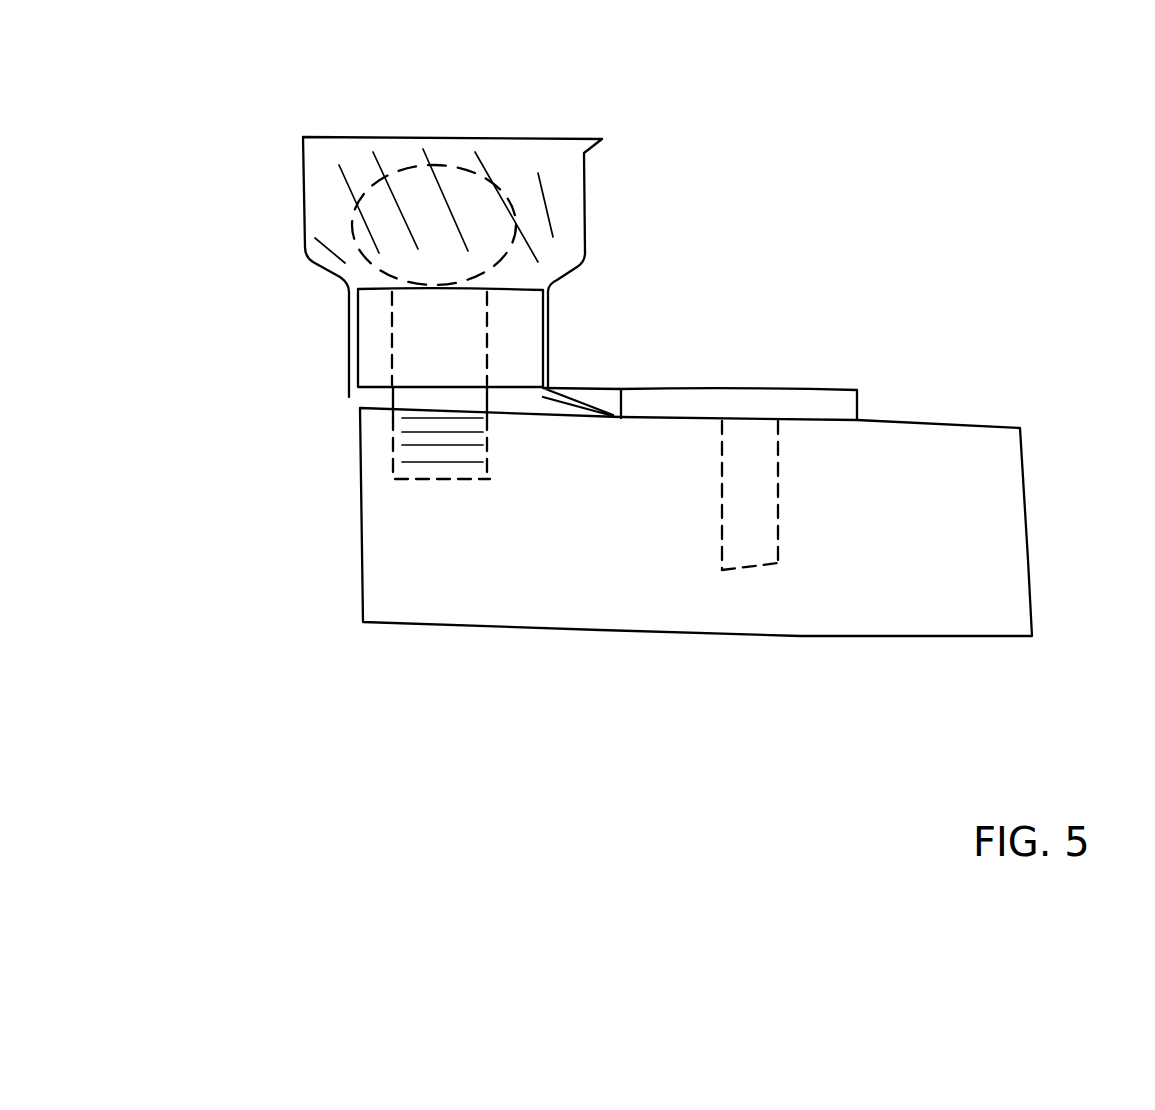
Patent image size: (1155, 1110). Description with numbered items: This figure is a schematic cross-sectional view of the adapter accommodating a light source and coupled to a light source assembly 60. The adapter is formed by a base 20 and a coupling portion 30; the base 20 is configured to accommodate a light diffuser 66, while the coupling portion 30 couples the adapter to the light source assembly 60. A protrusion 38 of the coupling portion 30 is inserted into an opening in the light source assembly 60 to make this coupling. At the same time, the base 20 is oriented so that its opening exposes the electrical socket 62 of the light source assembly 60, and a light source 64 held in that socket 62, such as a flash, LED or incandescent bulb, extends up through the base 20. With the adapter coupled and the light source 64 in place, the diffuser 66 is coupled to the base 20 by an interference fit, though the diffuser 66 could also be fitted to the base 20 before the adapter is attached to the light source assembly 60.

The light diffuser 66 is at (582, 138).
The light source 64 is at (351, 216).
The base 20 is at (530, 333).
The coupling portion 30 is at (747, 398).
The light source assembly 60 is at (547, 672).
The electrical socket 62 is at (400, 471).
The protrusion 38 is at (782, 557).